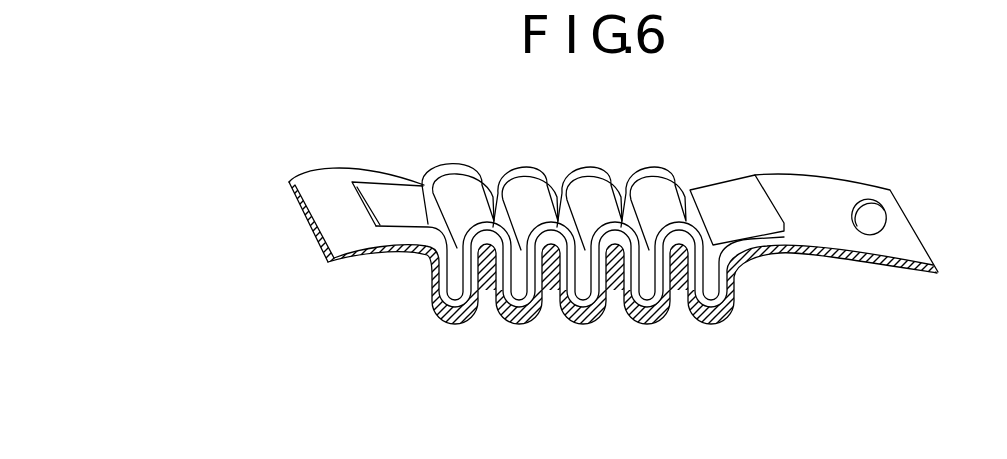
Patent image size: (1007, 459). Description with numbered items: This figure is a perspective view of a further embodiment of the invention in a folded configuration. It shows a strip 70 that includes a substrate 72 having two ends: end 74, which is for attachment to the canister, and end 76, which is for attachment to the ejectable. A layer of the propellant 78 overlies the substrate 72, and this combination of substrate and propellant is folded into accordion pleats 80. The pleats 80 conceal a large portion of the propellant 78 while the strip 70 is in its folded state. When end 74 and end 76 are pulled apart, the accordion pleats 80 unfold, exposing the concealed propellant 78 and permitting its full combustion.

The strip 70 is at (604, 246).
The substrate 72 is at (812, 233).
The end 74 is at (889, 214).
The end 76 is at (330, 223).
The propellant 78 is at (581, 180).
The accordion pleats 80 is at (759, 342).